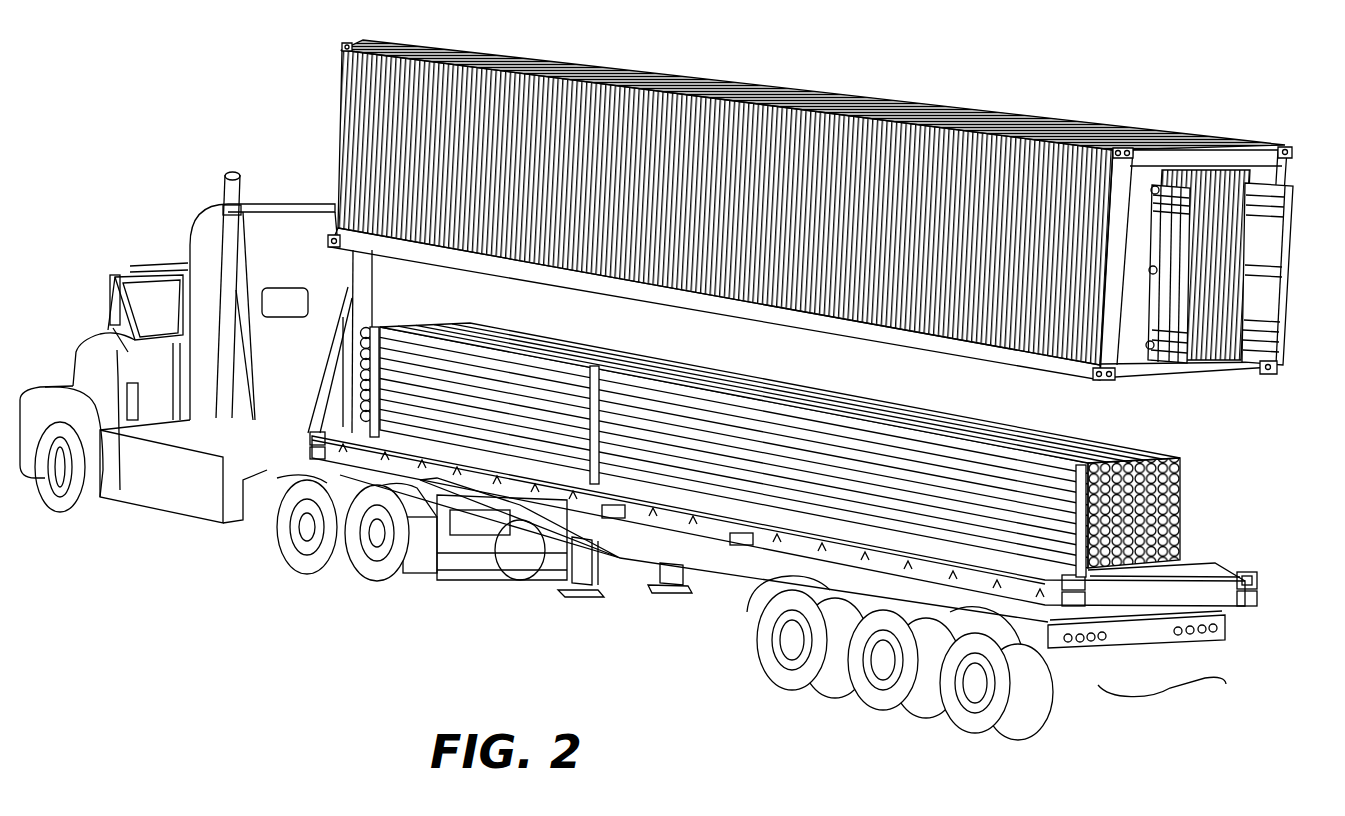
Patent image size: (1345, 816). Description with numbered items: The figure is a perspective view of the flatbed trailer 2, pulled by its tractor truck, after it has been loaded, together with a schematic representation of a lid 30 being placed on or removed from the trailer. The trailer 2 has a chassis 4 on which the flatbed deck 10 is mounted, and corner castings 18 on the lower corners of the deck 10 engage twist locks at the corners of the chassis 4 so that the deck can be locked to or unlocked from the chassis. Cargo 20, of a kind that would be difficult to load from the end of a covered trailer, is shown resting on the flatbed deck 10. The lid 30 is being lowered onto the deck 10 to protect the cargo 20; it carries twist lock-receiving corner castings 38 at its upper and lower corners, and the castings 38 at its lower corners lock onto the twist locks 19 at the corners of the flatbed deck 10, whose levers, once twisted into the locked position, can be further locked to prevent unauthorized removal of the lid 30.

The trailer 2 is at (550, 598).
The chassis 4 is at (710, 586).
The flatbed deck 10 is at (1208, 597).
The corner castings 18 is at (1262, 600).
The twist locks 19 is at (1258, 578).
The cargo 20 is at (1180, 497).
The lid 30 is at (1220, 108).
The twist lock-receiving corner castings 38 is at (1292, 154).